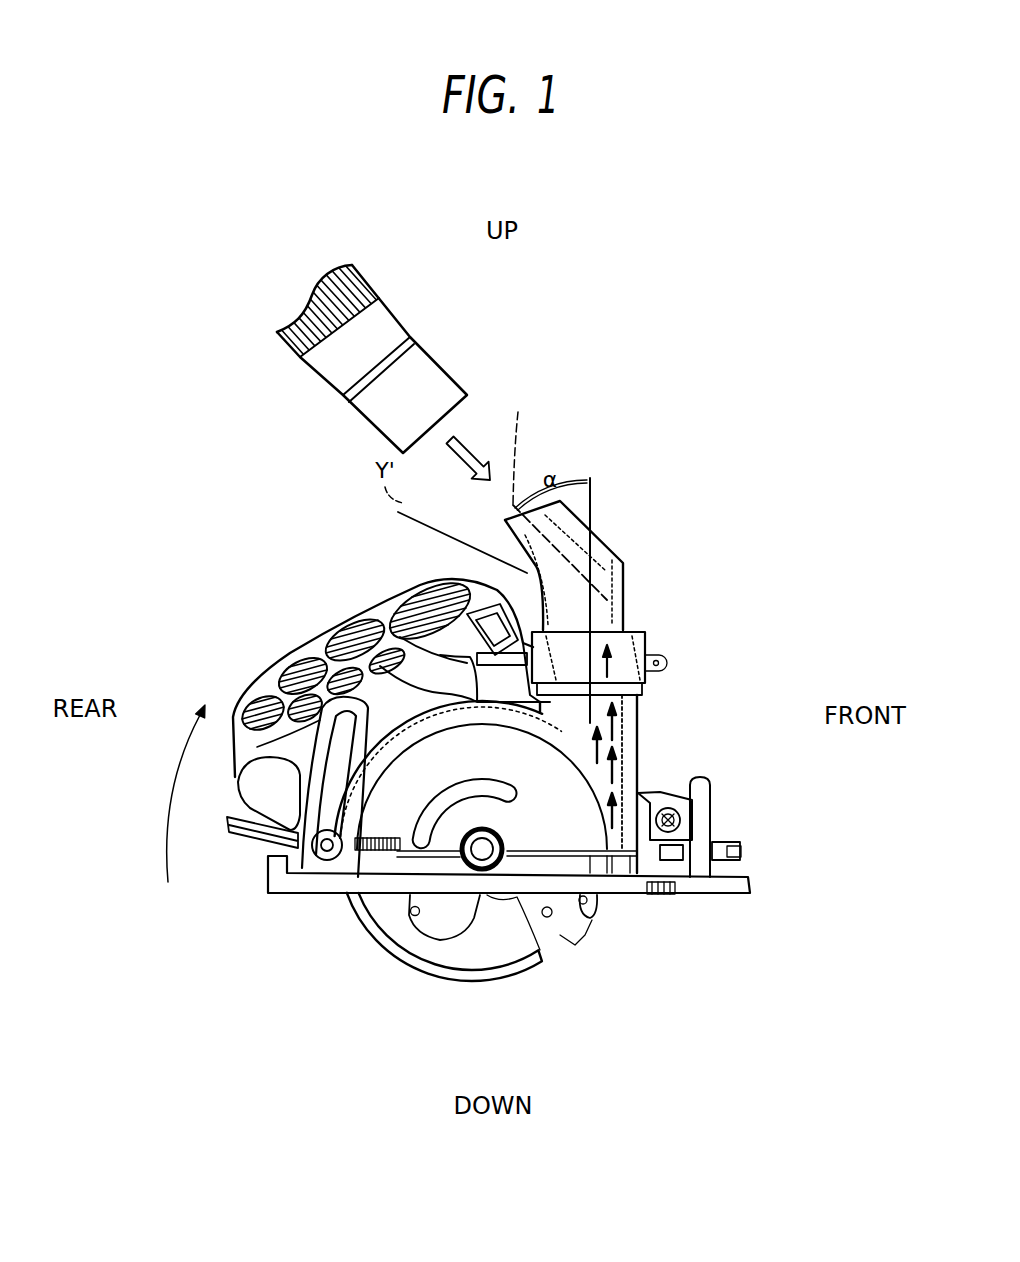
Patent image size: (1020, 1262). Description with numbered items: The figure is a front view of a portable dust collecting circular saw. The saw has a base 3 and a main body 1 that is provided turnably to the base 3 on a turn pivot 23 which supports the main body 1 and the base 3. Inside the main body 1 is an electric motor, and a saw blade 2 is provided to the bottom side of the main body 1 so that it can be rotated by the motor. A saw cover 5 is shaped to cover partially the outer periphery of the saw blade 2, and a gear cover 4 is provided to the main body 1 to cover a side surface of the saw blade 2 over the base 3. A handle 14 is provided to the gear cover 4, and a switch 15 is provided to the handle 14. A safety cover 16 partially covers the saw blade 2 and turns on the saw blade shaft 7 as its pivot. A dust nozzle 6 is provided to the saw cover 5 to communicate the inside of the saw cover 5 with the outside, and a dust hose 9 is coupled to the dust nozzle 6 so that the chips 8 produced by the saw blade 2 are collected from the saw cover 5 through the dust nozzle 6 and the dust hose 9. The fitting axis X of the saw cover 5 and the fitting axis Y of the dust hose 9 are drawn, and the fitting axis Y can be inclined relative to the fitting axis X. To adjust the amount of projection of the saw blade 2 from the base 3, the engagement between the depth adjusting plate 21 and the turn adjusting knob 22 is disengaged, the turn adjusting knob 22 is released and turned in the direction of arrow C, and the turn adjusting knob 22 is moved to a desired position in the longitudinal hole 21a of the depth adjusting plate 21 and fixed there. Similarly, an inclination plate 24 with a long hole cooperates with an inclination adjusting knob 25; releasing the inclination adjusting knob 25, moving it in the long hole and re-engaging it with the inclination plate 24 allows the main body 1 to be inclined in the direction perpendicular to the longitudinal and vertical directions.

The main body 1 is at (498, 768).
The saw blade 2 is at (573, 932).
The base 3 is at (688, 897).
The gear cover 4 is at (644, 797).
The saw cover 5 is at (638, 732).
The dust nozzle 6 is at (623, 578).
The saw blade shaft 7 is at (478, 860).
The chips 8 is at (617, 725).
The dust hose 9 is at (430, 353).
The handle 14 is at (365, 699).
The switch 15 is at (443, 670).
The safety cover 16 is at (474, 975).
The depth adjusting plate 21 is at (252, 700).
The longitudinal hole 21a is at (282, 675).
The turn adjusting knob 22 is at (320, 857).
The turn pivot 23 is at (692, 800).
The inclination plate 24 is at (702, 815).
The inclination adjusting knob 25 is at (733, 850).
The arrow C is at (178, 793).
The fitting axis X is at (593, 503).
The fitting axis Y is at (559, 491).